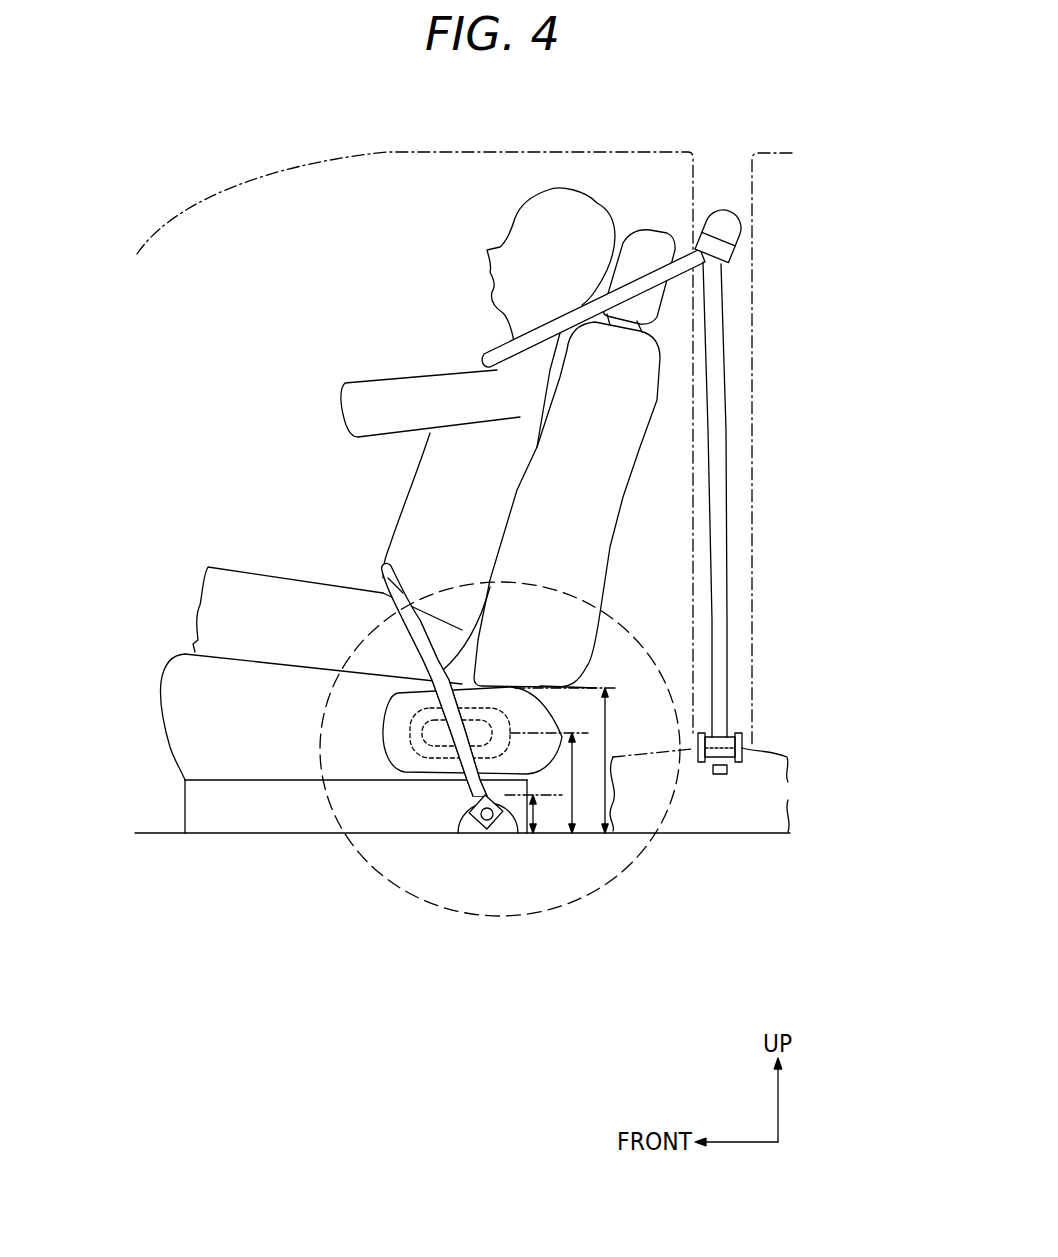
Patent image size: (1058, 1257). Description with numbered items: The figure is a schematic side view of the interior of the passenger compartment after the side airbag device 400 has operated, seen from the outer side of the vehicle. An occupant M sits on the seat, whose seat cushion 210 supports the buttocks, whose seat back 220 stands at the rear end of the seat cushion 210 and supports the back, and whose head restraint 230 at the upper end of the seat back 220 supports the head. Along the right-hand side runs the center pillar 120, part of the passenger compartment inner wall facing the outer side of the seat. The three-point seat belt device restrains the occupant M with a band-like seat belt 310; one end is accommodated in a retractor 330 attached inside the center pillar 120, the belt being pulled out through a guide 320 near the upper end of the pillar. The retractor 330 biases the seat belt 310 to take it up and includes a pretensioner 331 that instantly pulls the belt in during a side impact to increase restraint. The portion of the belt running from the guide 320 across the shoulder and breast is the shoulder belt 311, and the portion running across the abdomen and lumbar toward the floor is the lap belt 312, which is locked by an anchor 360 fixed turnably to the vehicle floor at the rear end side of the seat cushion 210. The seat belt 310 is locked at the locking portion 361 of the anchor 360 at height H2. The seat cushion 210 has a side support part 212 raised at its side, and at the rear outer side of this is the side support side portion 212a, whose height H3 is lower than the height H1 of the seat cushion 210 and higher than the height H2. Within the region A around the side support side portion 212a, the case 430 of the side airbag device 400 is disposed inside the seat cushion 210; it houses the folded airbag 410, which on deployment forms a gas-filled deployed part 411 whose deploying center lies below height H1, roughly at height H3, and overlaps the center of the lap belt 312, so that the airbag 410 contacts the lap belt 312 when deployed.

The occupant M is at (553, 188).
The center pillar 120 is at (760, 348).
The seat cushion 210 is at (330, 743).
The side support part 212 is at (183, 723).
The side support side portion 212a is at (395, 731).
The seat back 220 is at (643, 443).
The head restraint 230 is at (642, 252).
The seat belt 310 is at (297, 297).
The shoulder belt 311 is at (497, 352).
The lap belt 312 is at (383, 570).
The guide 320 is at (723, 226).
The retractor 330 is at (743, 747).
The pretensioner 331 is at (723, 750).
The anchor 360 is at (456, 812).
The locking portion 361 is at (488, 822).
The side airbag device 400 is at (422, 846).
The airbag 410 is at (419, 778).
The deployed part 411 is at (388, 736).
The case 430 is at (418, 747).
The region A is at (643, 853).
The height of the seat cushion H1 is at (576, 760).
The height of the locking portion H2 is at (536, 815).
The height of the side support side portion H3 is at (556, 783).